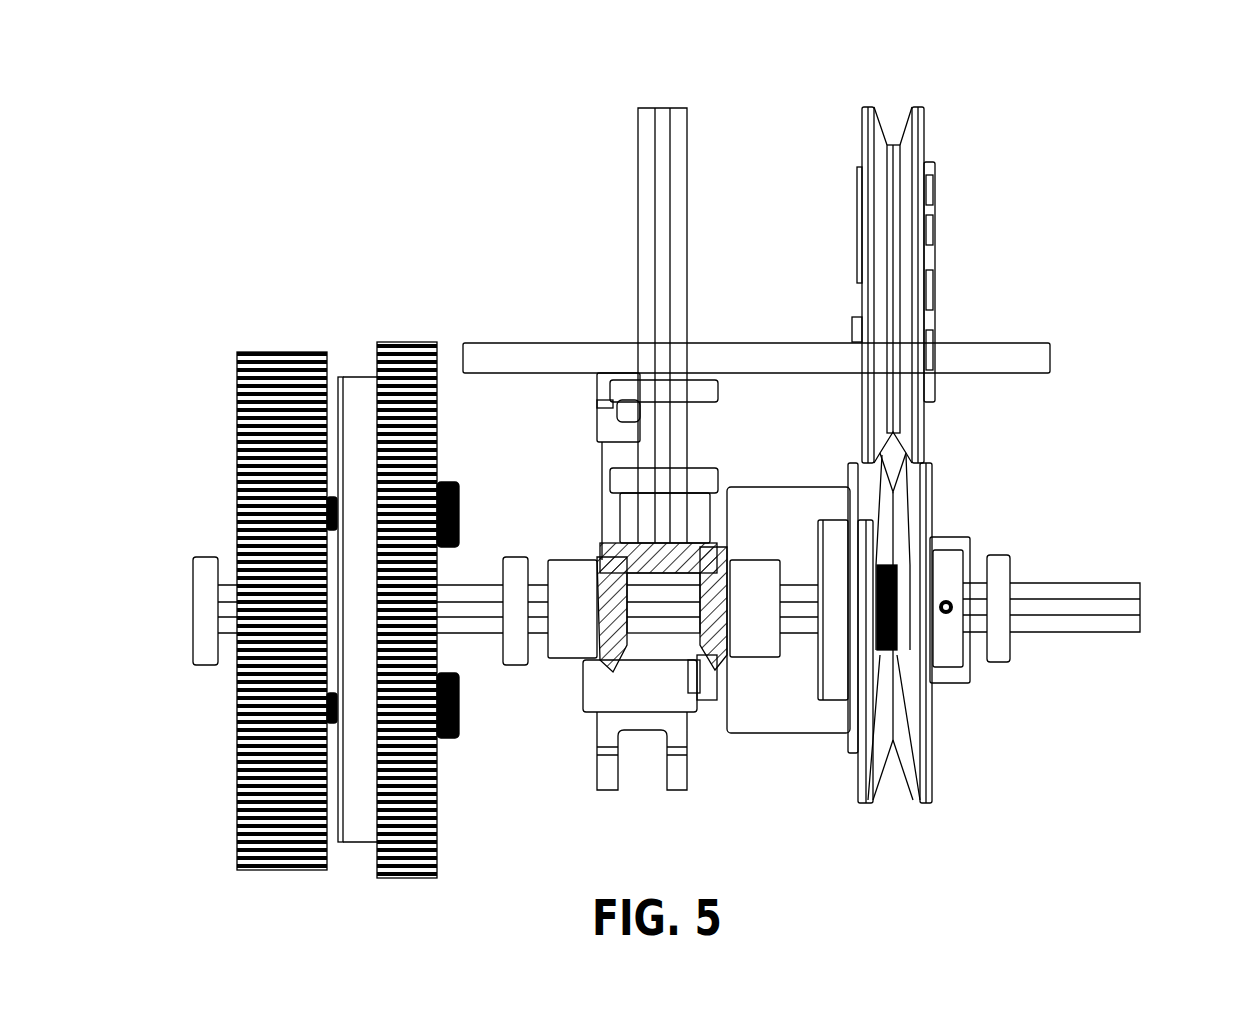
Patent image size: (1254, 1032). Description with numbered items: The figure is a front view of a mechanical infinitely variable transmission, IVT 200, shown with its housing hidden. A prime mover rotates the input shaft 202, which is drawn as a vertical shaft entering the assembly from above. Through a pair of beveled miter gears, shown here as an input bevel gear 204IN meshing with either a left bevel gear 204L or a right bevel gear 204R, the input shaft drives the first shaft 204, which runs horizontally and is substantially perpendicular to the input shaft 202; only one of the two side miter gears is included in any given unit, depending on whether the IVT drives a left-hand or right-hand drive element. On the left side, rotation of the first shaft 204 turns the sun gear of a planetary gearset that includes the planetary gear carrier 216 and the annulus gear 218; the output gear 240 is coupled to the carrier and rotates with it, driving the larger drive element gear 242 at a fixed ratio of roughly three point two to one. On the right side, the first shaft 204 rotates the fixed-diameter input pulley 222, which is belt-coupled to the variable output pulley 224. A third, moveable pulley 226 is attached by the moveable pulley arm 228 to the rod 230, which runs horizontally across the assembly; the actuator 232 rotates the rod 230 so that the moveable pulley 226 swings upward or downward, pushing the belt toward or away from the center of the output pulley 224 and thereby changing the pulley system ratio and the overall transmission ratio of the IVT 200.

The mechanical infinitely variable transmission (IVT) 200 is at (675, 66).
The input shaft 202 is at (619, 325).
The first shaft 204 is at (1073, 610).
The input bevel gear 204IN is at (607, 526).
The left bevel gear 204L is at (573, 641).
The right bevel gear 204R is at (721, 661).
The planetary gear carrier 216 is at (313, 641).
The annulus gear 218 is at (466, 610).
The input pulley 222 is at (788, 645).
The output pulley 224 is at (940, 642).
The moveable pulley 226 is at (955, 299).
The moveable pulley arm 228 is at (957, 282).
The rod 230 is at (756, 328).
The actuator 232 is at (650, 600).
The output gear 240 is at (363, 595).
The drive element gear 242 is at (233, 599).